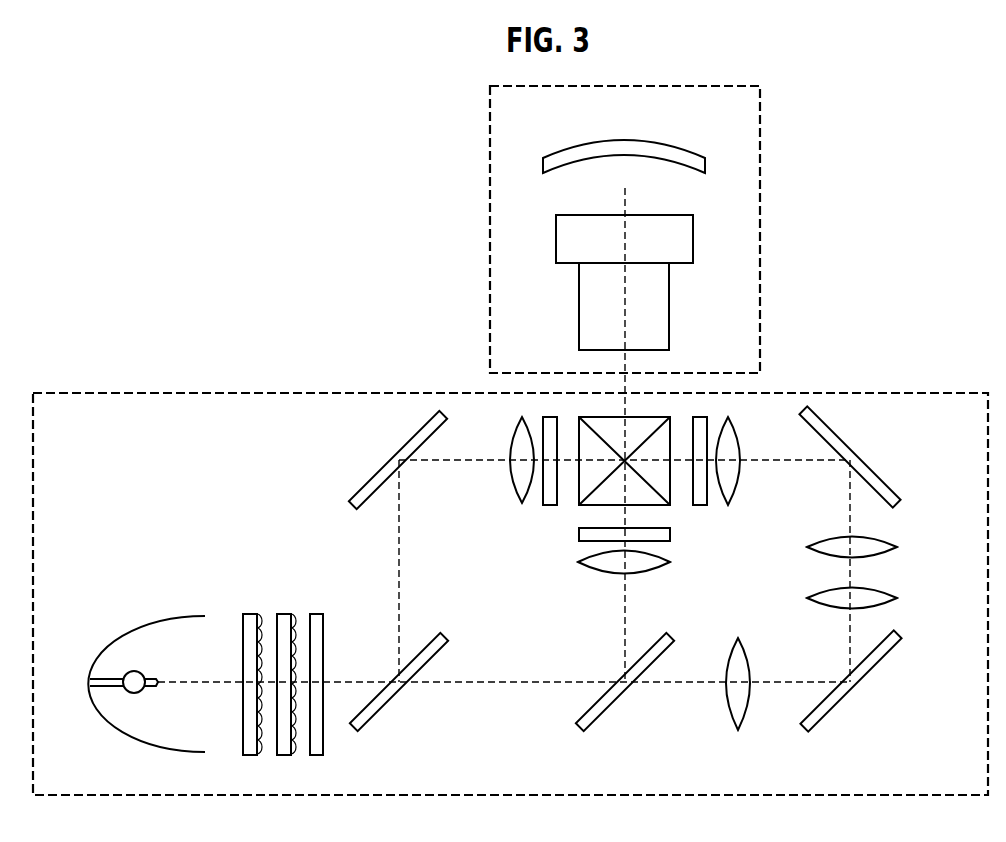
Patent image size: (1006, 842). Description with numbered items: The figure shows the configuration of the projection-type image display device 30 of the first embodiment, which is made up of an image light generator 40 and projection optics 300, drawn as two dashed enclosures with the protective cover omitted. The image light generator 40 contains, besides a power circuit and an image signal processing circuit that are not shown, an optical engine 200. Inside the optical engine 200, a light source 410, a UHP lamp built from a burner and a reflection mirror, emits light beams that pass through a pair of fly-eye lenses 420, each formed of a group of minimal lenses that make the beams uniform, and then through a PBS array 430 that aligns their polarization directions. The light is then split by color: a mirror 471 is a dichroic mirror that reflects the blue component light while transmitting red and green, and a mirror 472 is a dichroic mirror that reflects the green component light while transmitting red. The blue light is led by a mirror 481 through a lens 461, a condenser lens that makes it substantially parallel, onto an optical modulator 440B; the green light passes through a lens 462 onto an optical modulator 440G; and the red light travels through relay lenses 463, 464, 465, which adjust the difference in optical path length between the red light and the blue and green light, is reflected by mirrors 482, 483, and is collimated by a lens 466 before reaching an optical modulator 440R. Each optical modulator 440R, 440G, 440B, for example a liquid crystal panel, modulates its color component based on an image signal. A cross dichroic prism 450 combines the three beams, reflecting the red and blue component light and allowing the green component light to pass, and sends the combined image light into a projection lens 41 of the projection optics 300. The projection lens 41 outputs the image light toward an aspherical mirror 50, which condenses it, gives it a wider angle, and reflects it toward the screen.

The projection-type image display device 30 is at (510, 440).
The projection optics 300 is at (760, 181).
The image light generator 40 is at (930, 387).
The optical engine 200 is at (510, 566).
The aspherical mirror 50 is at (687, 158).
The projection lens 41 is at (645, 307).
The light source 410 is at (148, 747).
The fly-eye lenses 420 is at (297, 764).
The PBS array 430 is at (318, 757).
The optical modulator 440R is at (703, 418).
The optical modulator 440G is at (660, 535).
The optical modulator 440B is at (548, 503).
The cross dichroic prism 450 is at (577, 503).
The lens 461 is at (520, 487).
The lens 462 is at (647, 564).
The lens 463 is at (742, 717).
The lens 464 is at (875, 593).
The lens 465 is at (873, 547).
The lens 466 is at (727, 442).
The mirror 471 is at (367, 715).
The mirror 472 is at (593, 713).
The mirror 481 is at (355, 497).
The mirror 482 is at (827, 715).
The mirror 483 is at (875, 480).